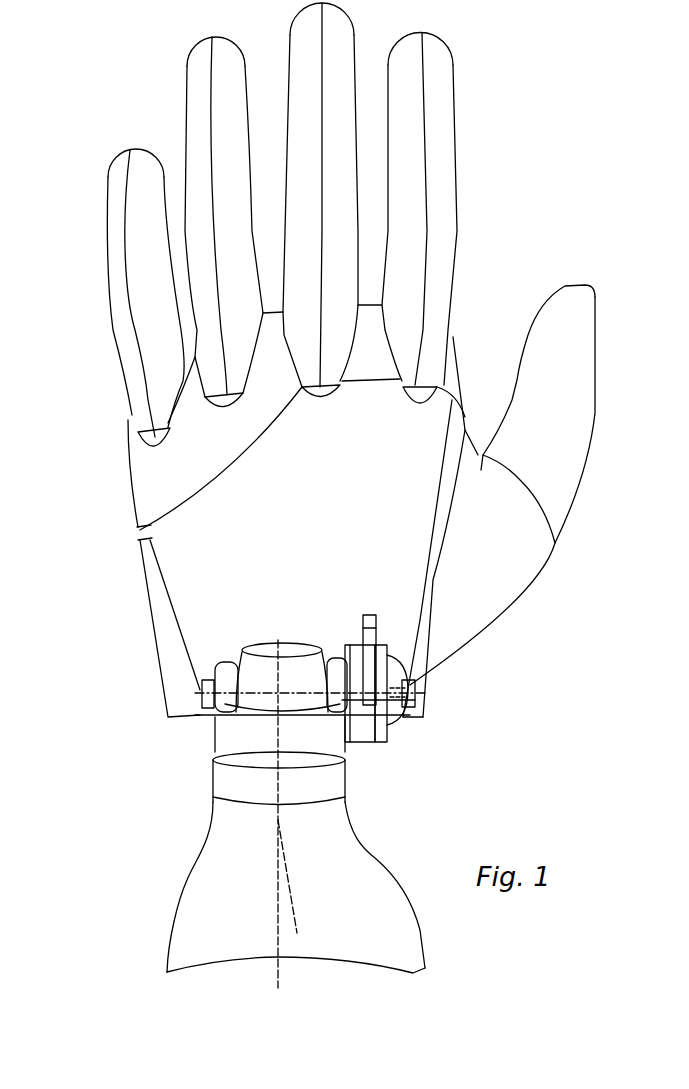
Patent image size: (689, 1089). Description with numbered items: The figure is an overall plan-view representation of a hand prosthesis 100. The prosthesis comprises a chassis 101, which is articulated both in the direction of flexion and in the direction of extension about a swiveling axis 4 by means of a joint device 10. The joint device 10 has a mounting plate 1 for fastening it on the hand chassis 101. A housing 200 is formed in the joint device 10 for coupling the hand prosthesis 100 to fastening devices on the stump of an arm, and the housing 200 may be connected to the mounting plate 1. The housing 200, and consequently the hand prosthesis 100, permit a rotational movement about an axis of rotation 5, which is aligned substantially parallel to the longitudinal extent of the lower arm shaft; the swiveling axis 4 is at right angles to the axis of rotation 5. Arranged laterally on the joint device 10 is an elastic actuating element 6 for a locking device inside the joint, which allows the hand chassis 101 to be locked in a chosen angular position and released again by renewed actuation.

The hand prosthesis 100 is at (505, 245).
The chassis 101 is at (205, 552).
The mounting plate 1 is at (377, 628).
The swiveling axis 4 is at (202, 693).
The elastic actuating element 6 is at (408, 680).
The joint device 10 is at (405, 748).
The housing 200 is at (217, 748).
The axis of rotation 5 is at (277, 864).